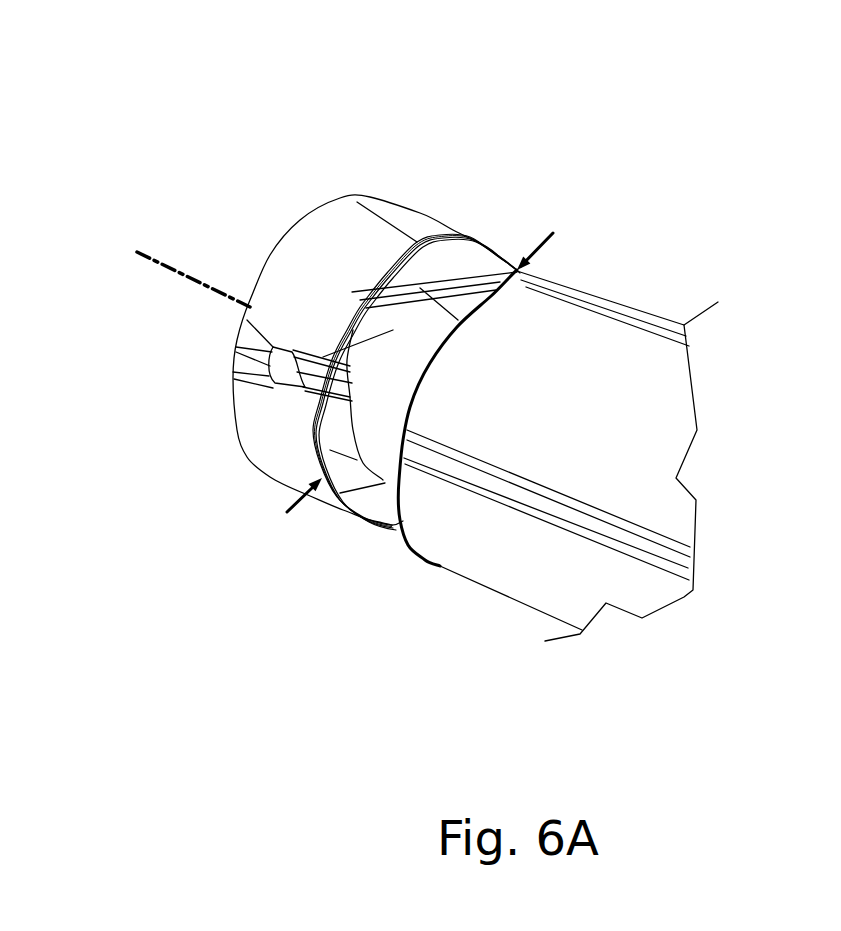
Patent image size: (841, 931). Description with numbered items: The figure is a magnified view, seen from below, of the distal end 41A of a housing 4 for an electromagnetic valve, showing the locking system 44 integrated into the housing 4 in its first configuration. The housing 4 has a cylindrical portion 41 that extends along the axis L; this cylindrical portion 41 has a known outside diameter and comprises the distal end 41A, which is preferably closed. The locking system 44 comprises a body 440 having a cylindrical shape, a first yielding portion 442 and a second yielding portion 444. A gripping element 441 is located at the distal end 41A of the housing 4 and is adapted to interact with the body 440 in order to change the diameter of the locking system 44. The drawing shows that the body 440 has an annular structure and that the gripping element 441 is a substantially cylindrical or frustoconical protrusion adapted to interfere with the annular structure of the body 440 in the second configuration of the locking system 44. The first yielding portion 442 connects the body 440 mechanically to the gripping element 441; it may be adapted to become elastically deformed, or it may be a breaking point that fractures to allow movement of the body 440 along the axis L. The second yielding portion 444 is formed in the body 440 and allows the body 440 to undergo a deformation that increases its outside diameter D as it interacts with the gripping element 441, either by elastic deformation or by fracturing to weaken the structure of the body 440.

The housing 4 is at (663, 710).
The cylindrical portion 41 is at (690, 322).
The distal end 41A is at (648, 222).
The locking system 44 is at (247, 193).
The body 440 is at (377, 197).
The gripping element 441 is at (390, 465).
The first yielding portion 442 is at (455, 258).
The second yielding portion 444 is at (291, 393).
The axis L is at (183, 274).
The outside diameter D is at (313, 497).